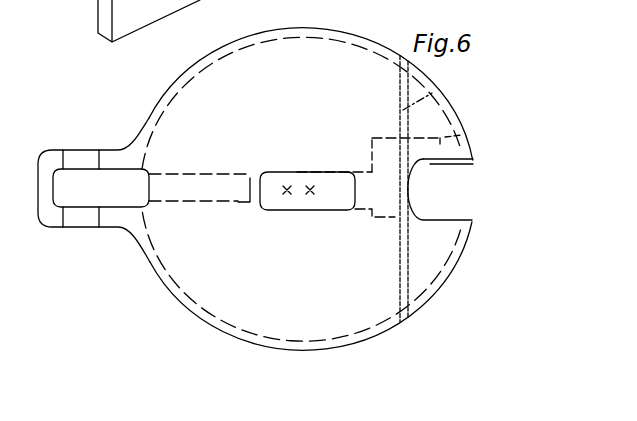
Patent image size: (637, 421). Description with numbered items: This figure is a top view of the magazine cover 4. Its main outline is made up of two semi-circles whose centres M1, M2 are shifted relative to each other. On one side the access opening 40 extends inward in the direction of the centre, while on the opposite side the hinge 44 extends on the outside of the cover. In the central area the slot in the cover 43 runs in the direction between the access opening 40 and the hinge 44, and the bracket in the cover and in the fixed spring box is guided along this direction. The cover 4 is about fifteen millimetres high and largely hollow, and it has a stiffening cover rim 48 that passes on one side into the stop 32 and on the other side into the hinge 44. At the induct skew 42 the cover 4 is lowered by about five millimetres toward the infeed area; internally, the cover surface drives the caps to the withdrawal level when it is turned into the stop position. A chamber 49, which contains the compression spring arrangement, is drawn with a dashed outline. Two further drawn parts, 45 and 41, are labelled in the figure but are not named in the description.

The magazine cover 4 is at (350, 34).
The stiffening cover rim 48 is at (152, 106).
The connector 45 is at (80, 149).
The hinge 44 is at (110, 218).
The chamber 49 is at (218, 185).
The slot in the cover 43 is at (338, 180).
The centre M1 is at (286, 188).
The centre M2 is at (311, 188).
The induct skew 42 is at (447, 86).
The recess 41 is at (468, 131).
The stop 32 is at (455, 156).
The access opening 40 is at (472, 181).